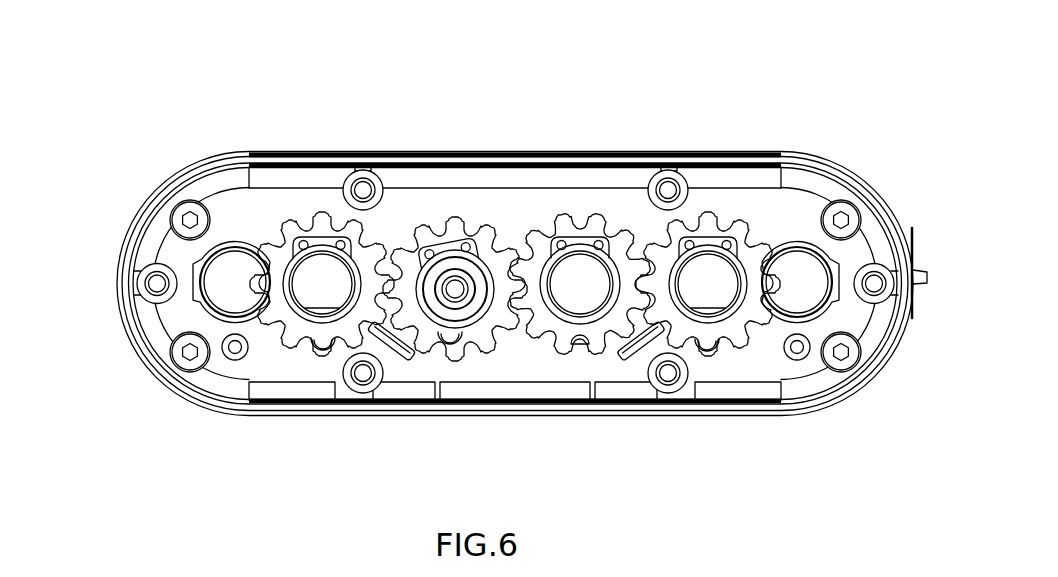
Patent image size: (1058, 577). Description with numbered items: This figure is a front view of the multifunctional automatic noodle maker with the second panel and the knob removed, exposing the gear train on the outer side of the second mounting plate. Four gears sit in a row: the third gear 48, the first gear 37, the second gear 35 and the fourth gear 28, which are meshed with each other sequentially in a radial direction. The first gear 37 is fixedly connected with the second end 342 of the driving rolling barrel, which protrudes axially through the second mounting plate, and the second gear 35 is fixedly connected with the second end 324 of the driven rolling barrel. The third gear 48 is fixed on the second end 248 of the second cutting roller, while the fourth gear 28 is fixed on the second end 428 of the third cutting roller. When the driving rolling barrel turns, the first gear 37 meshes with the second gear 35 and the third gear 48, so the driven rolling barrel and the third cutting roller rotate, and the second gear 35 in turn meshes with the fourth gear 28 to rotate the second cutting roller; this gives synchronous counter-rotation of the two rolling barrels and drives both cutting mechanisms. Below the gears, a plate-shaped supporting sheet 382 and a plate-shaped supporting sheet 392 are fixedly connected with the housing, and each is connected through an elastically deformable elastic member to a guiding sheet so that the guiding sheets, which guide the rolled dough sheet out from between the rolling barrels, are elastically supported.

The fourth gear 28 is at (240, 402).
The second end of the second cutting roller 248 is at (315, 282).
The second end of the driven rolling barrel 324 is at (460, 273).
The second end of the driving rolling barrel 342 is at (596, 276).
The second end of the third cutting roller 428 is at (723, 273).
The supporting sheet 382 is at (323, 332).
The second gear 35 is at (427, 330).
The first gear 37 is at (593, 340).
The third gear 48 is at (712, 340).
The supporting sheet 392 is at (655, 350).